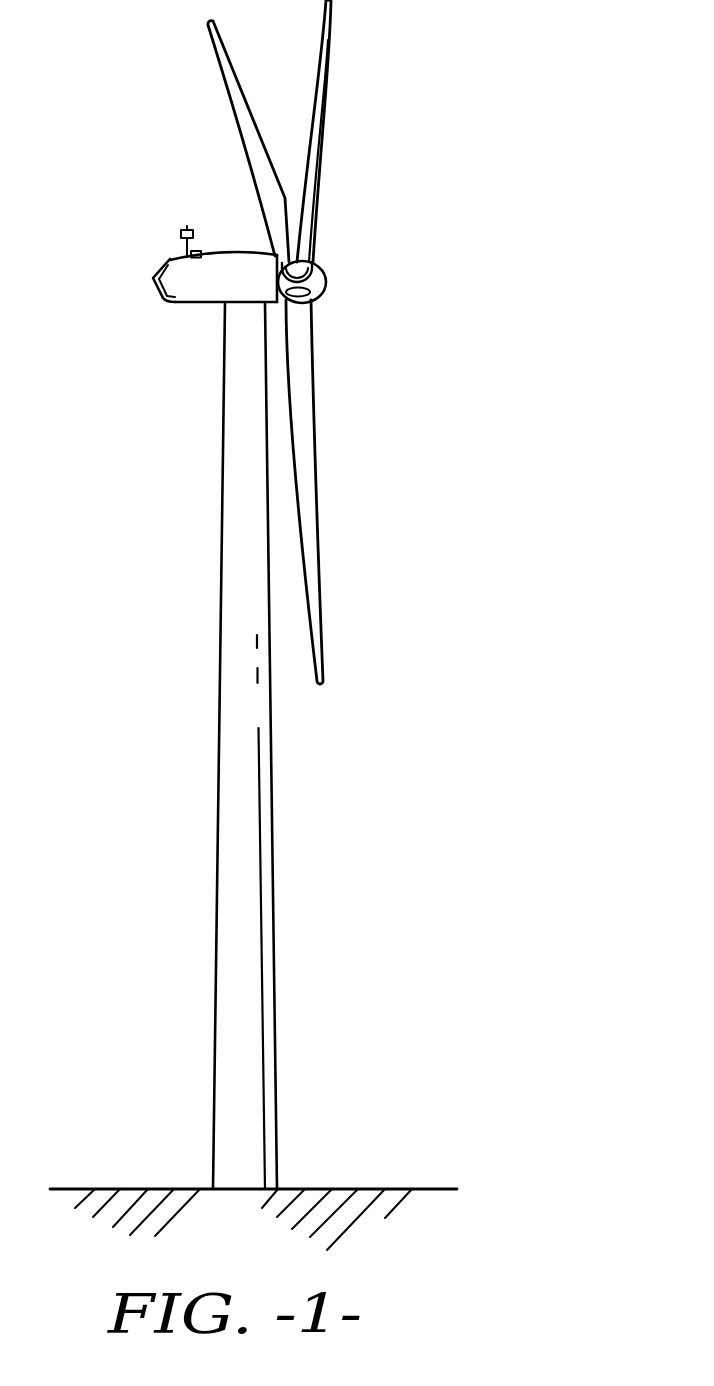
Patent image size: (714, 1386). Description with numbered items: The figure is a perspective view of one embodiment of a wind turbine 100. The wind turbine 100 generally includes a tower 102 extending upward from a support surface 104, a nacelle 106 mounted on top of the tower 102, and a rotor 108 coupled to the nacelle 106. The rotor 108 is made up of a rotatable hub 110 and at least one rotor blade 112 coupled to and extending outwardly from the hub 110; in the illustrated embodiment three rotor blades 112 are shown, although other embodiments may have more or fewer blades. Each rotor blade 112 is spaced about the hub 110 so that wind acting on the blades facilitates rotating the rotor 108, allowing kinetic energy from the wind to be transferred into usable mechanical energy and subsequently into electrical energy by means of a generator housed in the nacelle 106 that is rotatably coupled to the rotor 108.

The wind turbine 100 is at (446, 106).
The tower 102 is at (230, 867).
The support surface 104 is at (348, 1189).
The nacelle 106 is at (200, 305).
The rotor 108 is at (352, 290).
The rotatable hub 110 is at (320, 280).
The rotor blade 112 is at (235, 108).